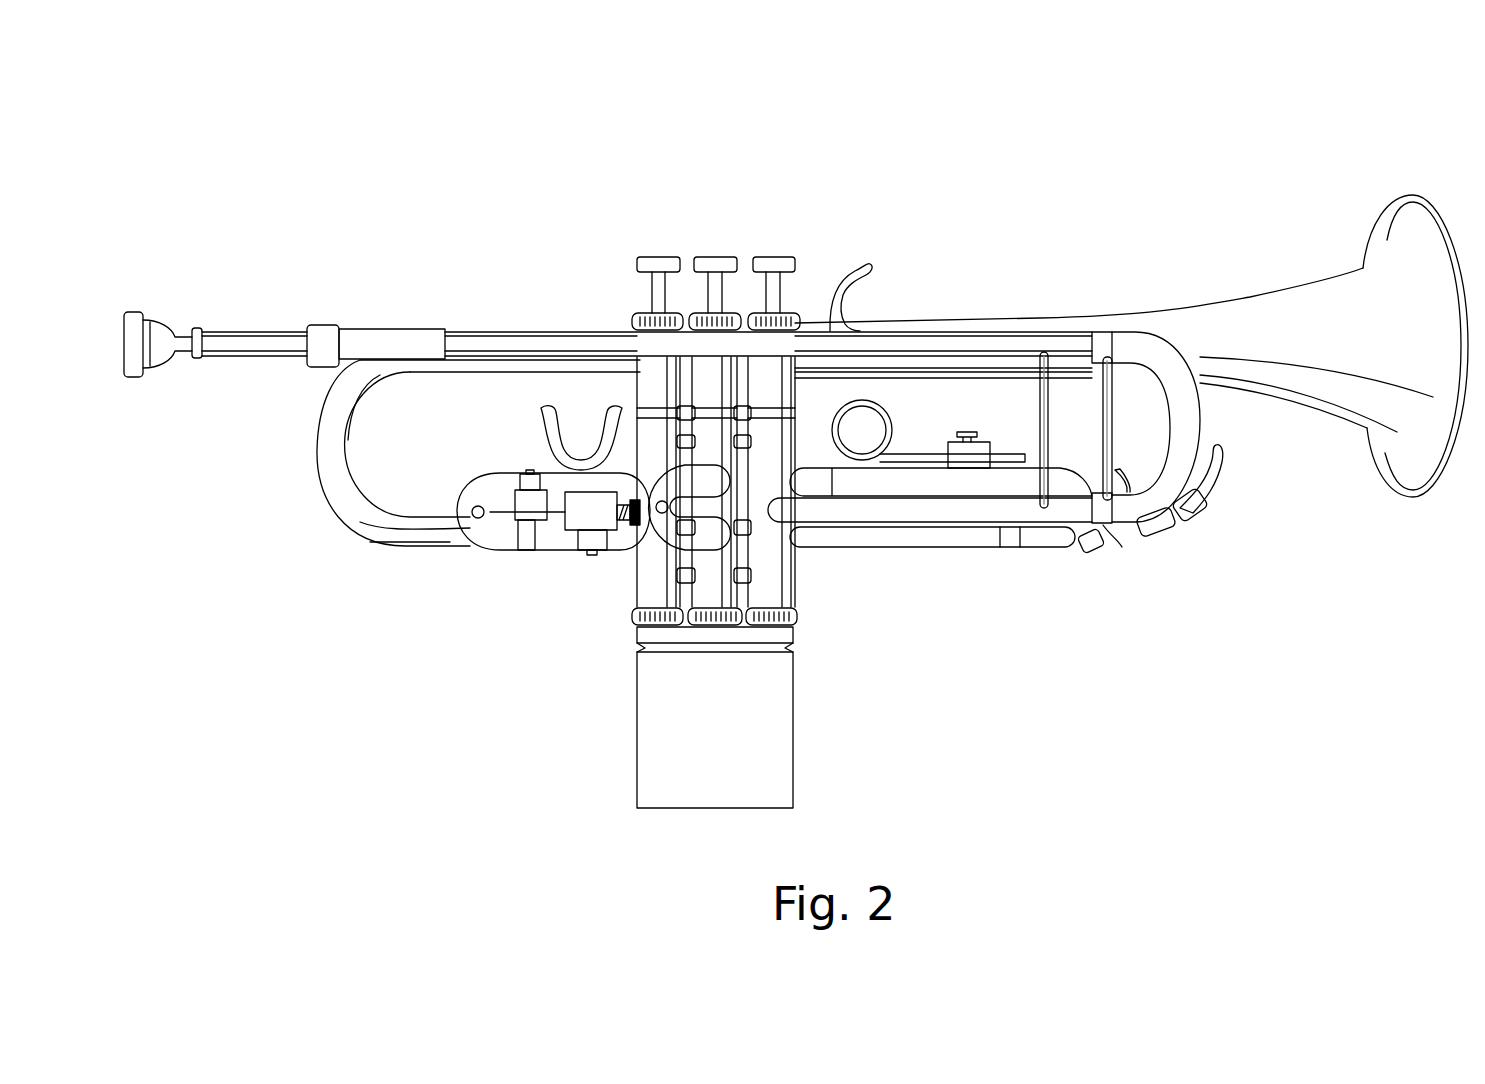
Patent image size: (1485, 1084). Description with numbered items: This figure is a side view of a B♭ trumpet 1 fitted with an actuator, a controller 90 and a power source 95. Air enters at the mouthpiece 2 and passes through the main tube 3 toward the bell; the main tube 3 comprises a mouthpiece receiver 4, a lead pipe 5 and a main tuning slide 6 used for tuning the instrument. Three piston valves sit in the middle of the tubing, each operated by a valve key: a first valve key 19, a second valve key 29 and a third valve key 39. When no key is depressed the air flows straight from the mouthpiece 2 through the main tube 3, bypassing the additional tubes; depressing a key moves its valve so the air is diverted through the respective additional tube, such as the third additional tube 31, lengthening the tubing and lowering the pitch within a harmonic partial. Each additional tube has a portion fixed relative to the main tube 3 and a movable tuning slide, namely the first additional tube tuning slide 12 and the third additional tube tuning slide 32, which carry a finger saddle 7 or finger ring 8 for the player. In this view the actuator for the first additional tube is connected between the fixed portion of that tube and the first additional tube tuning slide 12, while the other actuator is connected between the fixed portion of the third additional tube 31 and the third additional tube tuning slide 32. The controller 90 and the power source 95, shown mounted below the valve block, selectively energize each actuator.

The trumpet 1 is at (175, 167).
The mouthpiece 2 is at (163, 318).
The main tube 3 is at (377, 520).
The mouthpiece receiver 4 is at (370, 333).
The lead pipe 5 is at (1047, 345).
The main tuning slide 6 is at (1183, 463).
The finger saddle 7 is at (540, 420).
The finger ring 8 is at (892, 425).
The first additional tube tuning slide 12 is at (482, 522).
The first valve key 19 is at (655, 268).
The second valve key 29 is at (712, 268).
The third valve key 39 is at (770, 268).
The third additional tube 31 is at (870, 547).
The third additional tube tuning slide 32 is at (1055, 547).
The controller 90 is at (637, 632).
The power source 95 is at (779, 740).